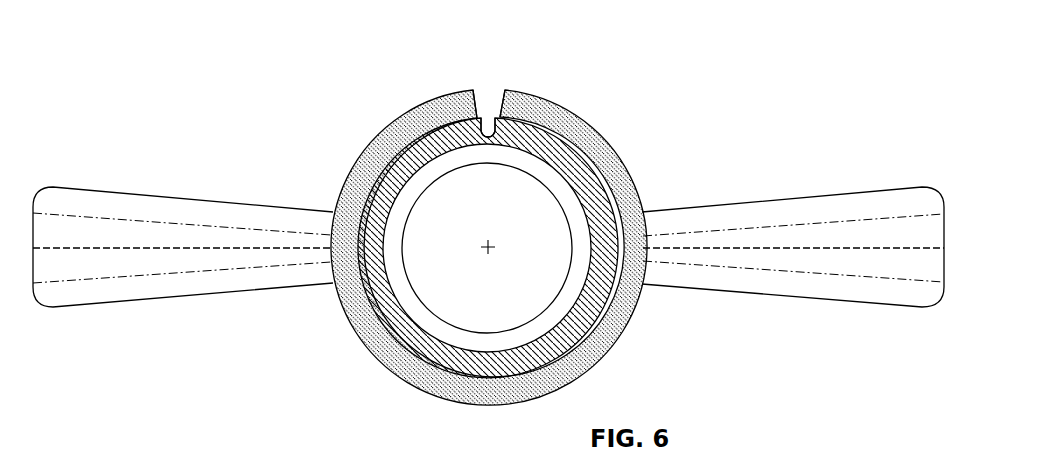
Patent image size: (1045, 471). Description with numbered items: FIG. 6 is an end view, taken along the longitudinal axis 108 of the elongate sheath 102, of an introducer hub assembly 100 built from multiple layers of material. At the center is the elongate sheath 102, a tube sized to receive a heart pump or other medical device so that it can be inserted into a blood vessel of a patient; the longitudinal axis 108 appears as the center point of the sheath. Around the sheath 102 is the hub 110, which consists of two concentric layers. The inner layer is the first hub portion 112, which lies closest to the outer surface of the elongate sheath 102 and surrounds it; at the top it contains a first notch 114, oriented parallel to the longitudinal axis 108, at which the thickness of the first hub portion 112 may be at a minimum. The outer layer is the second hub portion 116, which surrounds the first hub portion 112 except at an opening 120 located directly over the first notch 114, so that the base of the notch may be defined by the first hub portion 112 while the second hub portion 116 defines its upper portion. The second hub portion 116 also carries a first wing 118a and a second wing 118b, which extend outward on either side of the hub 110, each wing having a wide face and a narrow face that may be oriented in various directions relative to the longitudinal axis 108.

The introducer hub assembly 100 is at (235, 48).
The elongate sheath 102 is at (572, 202).
The longitudinal axis 108 is at (486, 252).
The hub 110 is at (619, 349).
The first hub portion 112 is at (543, 130).
The first notch 114 is at (494, 122).
The second hub portion 116 is at (418, 113).
The first wing 118a is at (118, 207).
The second wing 118b is at (846, 210).
The opening 120 is at (484, 114).